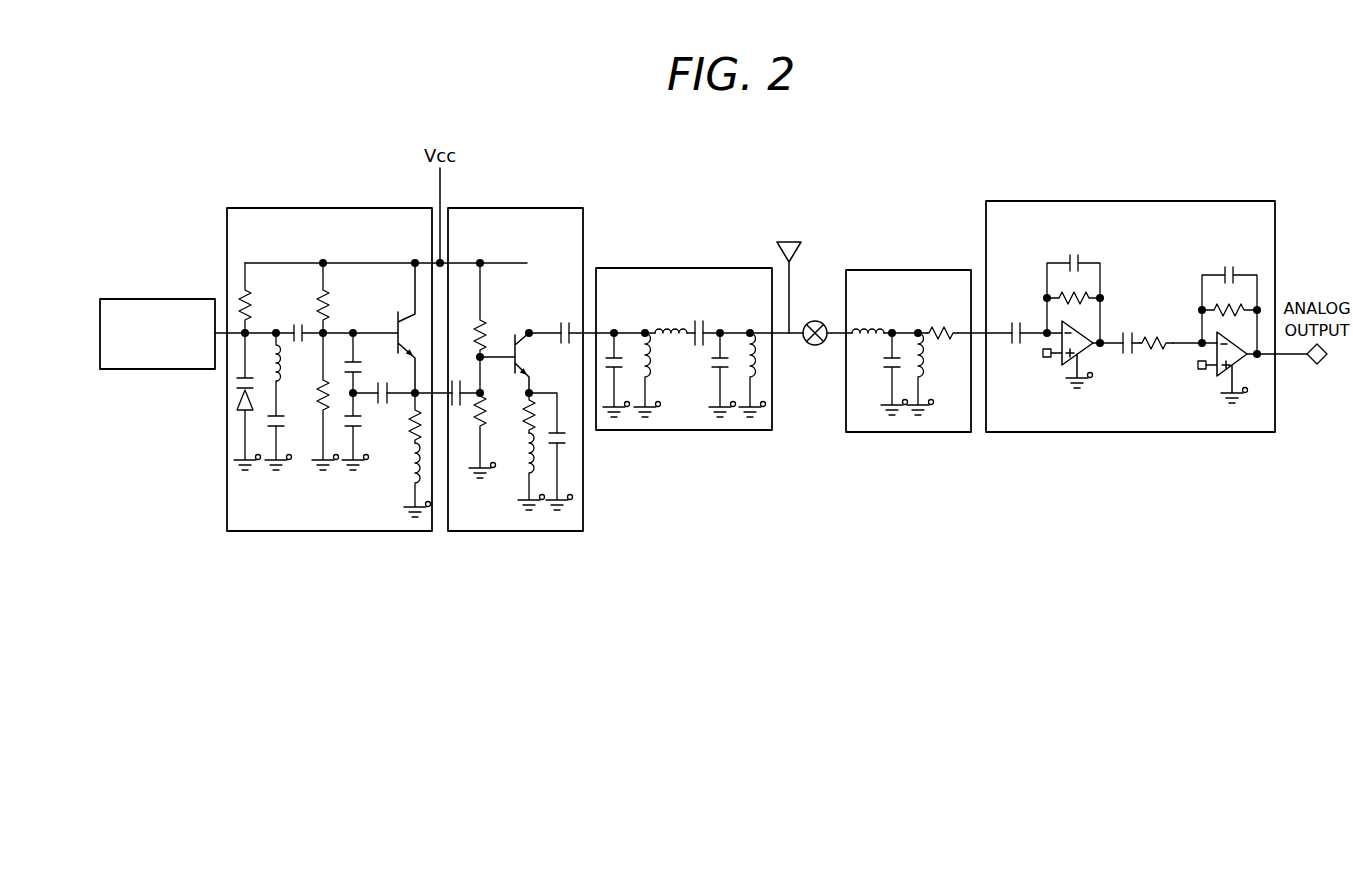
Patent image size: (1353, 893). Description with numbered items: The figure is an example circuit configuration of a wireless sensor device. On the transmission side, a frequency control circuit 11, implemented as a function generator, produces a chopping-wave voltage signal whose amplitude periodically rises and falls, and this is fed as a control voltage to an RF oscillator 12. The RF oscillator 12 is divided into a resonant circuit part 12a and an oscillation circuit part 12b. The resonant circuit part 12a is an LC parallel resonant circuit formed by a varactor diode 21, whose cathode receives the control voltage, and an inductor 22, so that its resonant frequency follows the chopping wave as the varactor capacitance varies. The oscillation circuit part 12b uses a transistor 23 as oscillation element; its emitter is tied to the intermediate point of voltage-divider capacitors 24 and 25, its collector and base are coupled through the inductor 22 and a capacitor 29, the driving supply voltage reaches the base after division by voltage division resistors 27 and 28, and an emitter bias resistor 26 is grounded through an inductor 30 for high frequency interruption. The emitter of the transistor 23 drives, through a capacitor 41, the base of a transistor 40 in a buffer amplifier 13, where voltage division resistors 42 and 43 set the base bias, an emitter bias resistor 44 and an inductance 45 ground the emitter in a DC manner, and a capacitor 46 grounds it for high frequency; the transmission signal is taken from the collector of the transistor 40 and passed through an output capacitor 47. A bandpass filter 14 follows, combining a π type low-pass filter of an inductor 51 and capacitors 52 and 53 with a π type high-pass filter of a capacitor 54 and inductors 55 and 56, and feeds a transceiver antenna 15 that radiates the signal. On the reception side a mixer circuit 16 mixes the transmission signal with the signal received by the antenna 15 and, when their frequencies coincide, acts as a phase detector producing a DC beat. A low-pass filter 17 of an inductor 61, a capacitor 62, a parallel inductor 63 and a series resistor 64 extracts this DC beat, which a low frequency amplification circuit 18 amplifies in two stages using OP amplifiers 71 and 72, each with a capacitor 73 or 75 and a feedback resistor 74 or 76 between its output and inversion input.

The frequency control circuit 11 is at (156, 298).
The RF oscillator 12 is at (332, 208).
The resonant circuit part 12a is at (228, 524).
The oscillation circuit part 12b is at (339, 524).
The buffer amplifier 13 is at (513, 208).
The bandpass filter 14 is at (682, 270).
The transceiver antenna 15 is at (802, 246).
The mixer circuit 16 is at (813, 322).
The low-pass filter 17 is at (902, 270).
The low frequency amplification circuit 18 is at (1122, 201).
The varactor diode 21 is at (236, 400).
The inductor 22 is at (283, 376).
The transistor 23 is at (396, 320).
The capacitor 24 is at (367, 370).
The capacitor 25 is at (360, 422).
The emitter bias resistor 26 is at (420, 427).
The voltage division resistor 27 is at (343, 299).
The voltage division resistor 28 is at (312, 402).
The capacitor 29 is at (297, 322).
The inductor 30 is at (412, 468).
The transistor 40 is at (525, 357).
The capacitor 41 is at (454, 378).
The voltage division resistor 42 is at (488, 325).
The voltage division resistor 43 is at (492, 417).
The emitter bias resistor 44 is at (519, 425).
The inductance 45 is at (534, 452).
The capacitor 46 is at (567, 438).
The output coupling capacitor 47 is at (558, 326).
The inductor 51 is at (663, 324).
The capacitor 52 is at (630, 360).
The capacitor 53 is at (710, 362).
The capacitor 54 is at (696, 321).
The inductor 55 is at (657, 362).
The inductor 56 is at (763, 362).
The inductor 61 is at (868, 326).
The capacitor 62 is at (882, 364).
The inductor 63 is at (930, 364).
The resistor 64 is at (943, 325).
The OP amplifier 71 is at (1064, 364).
The OP amplifier 72 is at (1218, 373).
The capacitor 73 is at (1072, 258).
The feedback resistor 74 is at (1085, 296).
The capacitor 75 is at (1227, 260).
The feedback resistor 76 is at (1218, 306).